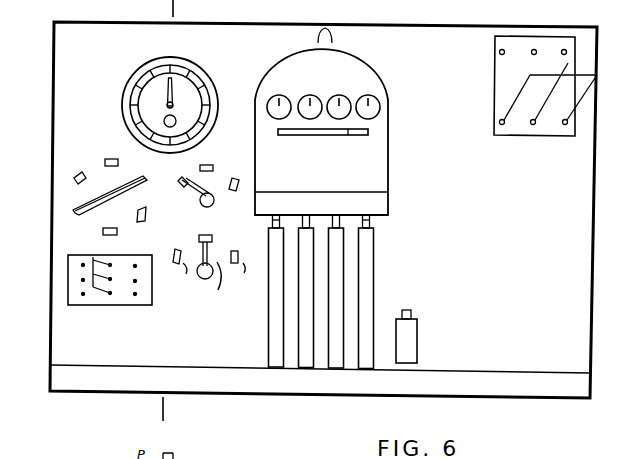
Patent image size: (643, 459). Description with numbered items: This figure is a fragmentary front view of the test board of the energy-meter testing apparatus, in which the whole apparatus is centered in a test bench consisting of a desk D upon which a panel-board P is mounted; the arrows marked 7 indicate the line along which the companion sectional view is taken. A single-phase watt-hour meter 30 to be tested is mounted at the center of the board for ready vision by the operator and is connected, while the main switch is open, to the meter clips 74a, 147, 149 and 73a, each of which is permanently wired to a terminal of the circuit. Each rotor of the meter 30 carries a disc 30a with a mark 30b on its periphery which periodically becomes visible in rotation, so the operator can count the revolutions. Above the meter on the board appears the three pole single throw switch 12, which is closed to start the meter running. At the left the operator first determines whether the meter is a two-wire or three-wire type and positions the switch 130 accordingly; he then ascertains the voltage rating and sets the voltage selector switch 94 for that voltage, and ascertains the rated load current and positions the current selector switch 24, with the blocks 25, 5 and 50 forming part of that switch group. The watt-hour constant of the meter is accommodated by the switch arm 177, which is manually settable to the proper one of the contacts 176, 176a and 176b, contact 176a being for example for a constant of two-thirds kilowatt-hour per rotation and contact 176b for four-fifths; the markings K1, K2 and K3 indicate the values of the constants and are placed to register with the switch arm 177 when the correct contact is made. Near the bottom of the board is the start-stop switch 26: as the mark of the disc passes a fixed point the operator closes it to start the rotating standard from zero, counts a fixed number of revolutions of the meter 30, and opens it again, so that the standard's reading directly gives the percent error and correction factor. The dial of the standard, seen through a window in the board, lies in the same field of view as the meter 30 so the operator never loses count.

The section line 7 is at (177, 4).
The desk D is at (48, 381).
The watt-hour meter under test 30 is at (380, 70).
The disc 30a is at (353, 131).
The mark 30b is at (316, 131).
The meter clip 147 is at (309, 214).
The meter clip 149 is at (351, 214).
The meter clip 74a is at (272, 221).
The meter clip 73a is at (375, 223).
The start-stop switch 26 is at (410, 350).
The panel-board P is at (583, 114).
The three pole single throw switch 12 is at (505, 76).
The voltage selector switch 94 is at (96, 178).
The block 25 is at (204, 159).
The pivot block 5 is at (177, 179).
The current selector switch 24 is at (190, 198).
The block 50 is at (242, 179).
The marking K2 is at (206, 250).
The contact 176a is at (196, 238).
The marking K1 is at (170, 253).
The contact 176 is at (175, 275).
The switch arm 177 is at (206, 285).
The marking K3 is at (243, 253).
The contact 176b is at (246, 274).
The switch 130 is at (122, 300).